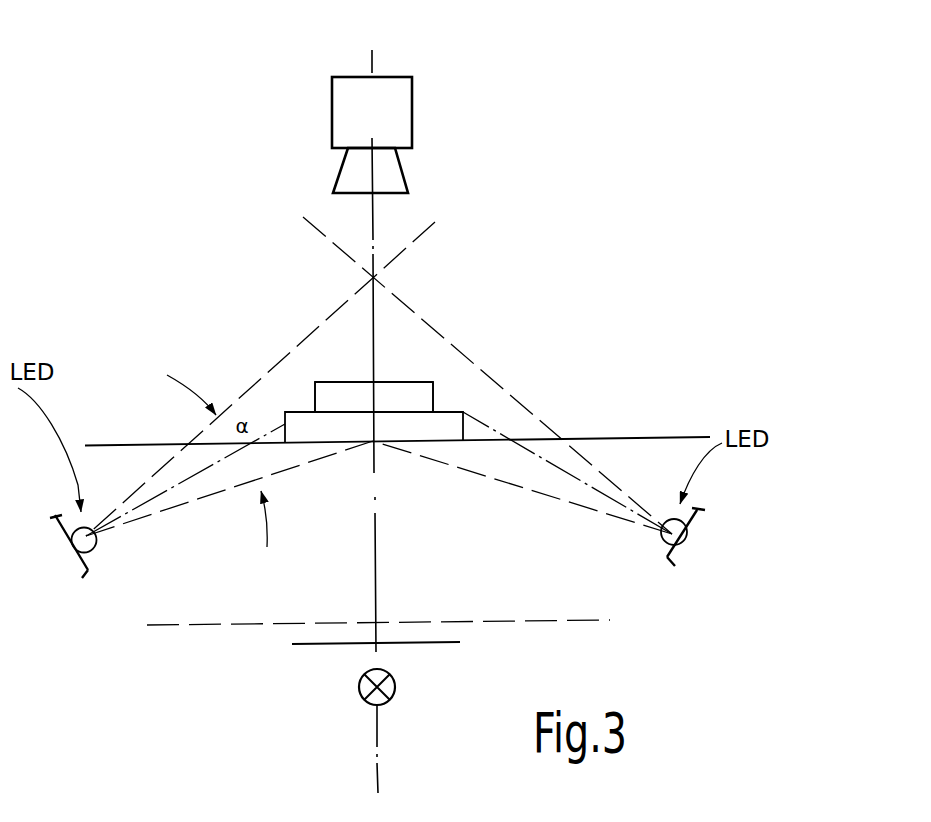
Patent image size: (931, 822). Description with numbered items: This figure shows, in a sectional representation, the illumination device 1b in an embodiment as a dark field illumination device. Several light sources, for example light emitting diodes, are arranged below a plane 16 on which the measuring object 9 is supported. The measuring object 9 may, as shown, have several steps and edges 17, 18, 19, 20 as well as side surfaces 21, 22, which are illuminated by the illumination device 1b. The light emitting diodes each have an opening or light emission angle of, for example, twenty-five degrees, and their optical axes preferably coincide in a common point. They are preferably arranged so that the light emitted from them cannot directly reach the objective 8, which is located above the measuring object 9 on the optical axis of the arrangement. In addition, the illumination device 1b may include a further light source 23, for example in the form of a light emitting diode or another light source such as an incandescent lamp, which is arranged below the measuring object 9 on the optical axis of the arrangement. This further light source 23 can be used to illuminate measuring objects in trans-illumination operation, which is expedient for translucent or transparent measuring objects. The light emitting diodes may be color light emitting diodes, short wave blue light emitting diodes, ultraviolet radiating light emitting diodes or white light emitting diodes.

The objective 8 is at (412, 101).
The measuring object 9 is at (436, 386).
The plane 16 is at (662, 436).
The step and edge 17 is at (284, 410).
The step and edge 18 is at (466, 410).
The step and edge 19 is at (432, 380).
The step and edge 20 is at (311, 388).
The side surface 21 is at (311, 391).
The side surface 22 is at (437, 392).
The further light source 23 is at (347, 697).
The illumination device 1b is at (778, 478).